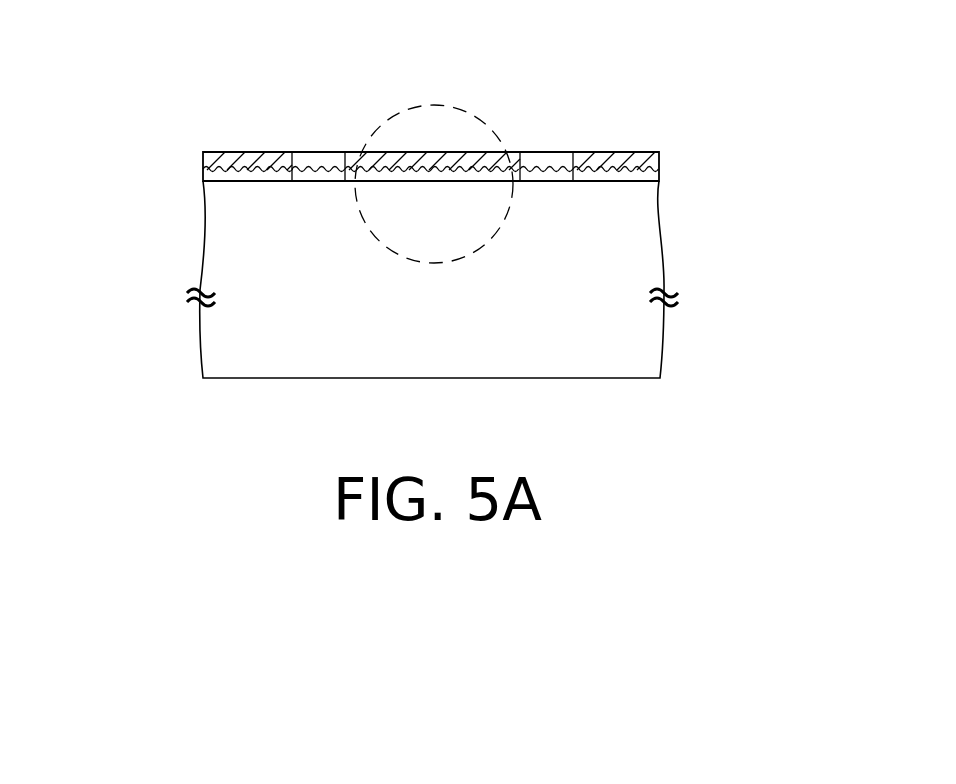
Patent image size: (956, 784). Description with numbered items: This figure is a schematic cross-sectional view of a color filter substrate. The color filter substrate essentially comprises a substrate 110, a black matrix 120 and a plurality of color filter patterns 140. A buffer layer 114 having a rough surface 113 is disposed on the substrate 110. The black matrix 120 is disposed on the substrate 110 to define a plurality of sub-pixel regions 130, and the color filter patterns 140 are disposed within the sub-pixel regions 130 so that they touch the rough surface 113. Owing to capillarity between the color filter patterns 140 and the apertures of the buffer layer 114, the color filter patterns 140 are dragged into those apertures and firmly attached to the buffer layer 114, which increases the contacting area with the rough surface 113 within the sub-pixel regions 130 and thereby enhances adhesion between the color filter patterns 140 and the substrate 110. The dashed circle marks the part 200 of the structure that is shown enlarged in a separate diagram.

The substrate 110 is at (232, 255).
The rough surface 113 is at (232, 150).
The buffer layer 114 is at (612, 160).
The black matrix 120 is at (304, 159).
The sub-pixel regions 130 is at (411, 154).
The color filter patterns 140 is at (485, 162).
The part marked 200 is at (500, 242).